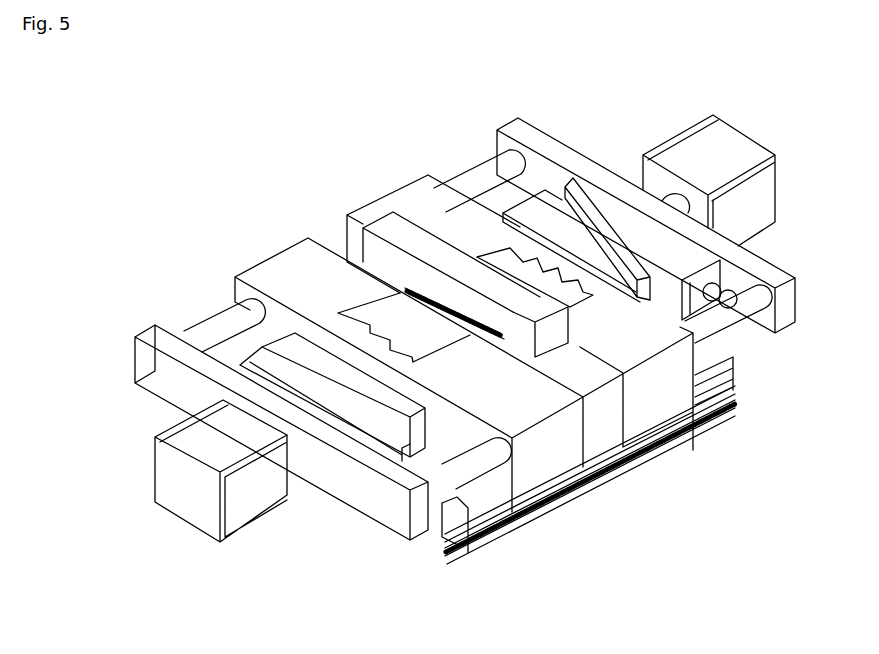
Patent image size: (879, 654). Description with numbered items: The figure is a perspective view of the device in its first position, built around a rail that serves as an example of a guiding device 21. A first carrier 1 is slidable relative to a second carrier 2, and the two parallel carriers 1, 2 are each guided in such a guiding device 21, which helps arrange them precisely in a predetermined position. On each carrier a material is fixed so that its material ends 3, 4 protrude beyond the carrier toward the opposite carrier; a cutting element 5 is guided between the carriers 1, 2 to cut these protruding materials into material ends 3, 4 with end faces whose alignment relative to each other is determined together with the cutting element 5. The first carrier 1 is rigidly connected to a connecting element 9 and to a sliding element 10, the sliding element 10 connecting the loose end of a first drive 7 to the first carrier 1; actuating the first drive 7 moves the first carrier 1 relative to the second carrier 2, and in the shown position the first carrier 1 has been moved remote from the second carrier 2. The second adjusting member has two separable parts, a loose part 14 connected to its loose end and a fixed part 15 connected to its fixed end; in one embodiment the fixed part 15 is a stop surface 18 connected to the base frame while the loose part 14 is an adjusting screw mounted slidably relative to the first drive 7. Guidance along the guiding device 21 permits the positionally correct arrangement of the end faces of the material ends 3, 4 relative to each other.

The first carrier 1 is at (295, 275).
The second carrier 2 is at (427, 203).
The material end 3 is at (427, 308).
The material end 4 is at (507, 268).
The cutting element 5 is at (398, 238).
The first drive 7 is at (762, 197).
The connecting element 9 is at (218, 328).
The sliding element 10 is at (148, 366).
The loose part 14 is at (636, 224).
The fixed part 15 is at (545, 210).
The stop surface 18 is at (263, 370).
The guiding device 21 is at (447, 530).